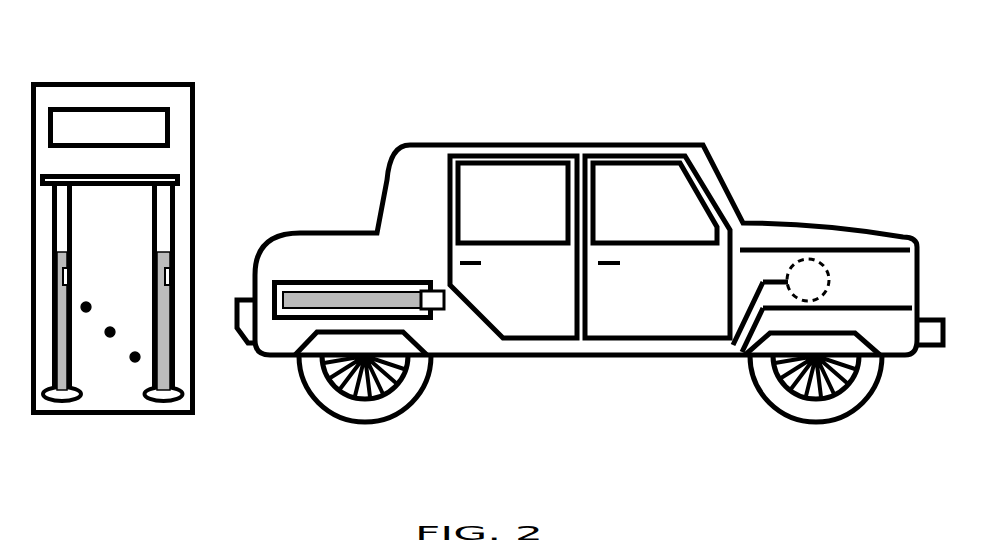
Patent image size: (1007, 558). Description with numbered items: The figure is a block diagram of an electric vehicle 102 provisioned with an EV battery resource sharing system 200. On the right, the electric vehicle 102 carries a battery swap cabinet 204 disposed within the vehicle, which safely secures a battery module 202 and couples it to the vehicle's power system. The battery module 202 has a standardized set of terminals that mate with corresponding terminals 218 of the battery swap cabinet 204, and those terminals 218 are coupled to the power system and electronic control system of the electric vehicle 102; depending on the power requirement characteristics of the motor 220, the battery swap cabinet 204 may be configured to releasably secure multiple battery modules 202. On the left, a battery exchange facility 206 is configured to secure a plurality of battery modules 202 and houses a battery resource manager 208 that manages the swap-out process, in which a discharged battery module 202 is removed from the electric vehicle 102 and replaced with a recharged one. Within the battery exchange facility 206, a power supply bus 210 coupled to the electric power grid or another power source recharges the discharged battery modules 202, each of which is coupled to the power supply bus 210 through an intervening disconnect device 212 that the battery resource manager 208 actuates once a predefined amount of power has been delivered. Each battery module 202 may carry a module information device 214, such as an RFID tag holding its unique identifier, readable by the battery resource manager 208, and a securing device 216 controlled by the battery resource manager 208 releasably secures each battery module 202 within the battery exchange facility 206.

The Electric Vehicle (EV) 102 is at (555, 143).
The EV battery resource sharing system 200 is at (838, 130).
The battery module 202 is at (173, 352).
The battery swap cabinet 204 is at (350, 280).
The battery exchange facility 206 is at (72, 82).
The battery resource manager 208 is at (140, 105).
The power supply bus 210 is at (180, 175).
The disconnect device 212 is at (153, 220).
The module information device 214 is at (172, 277).
The securing device 216 is at (80, 395).
The terminals 218 is at (430, 300).
The motor 220 is at (822, 264).